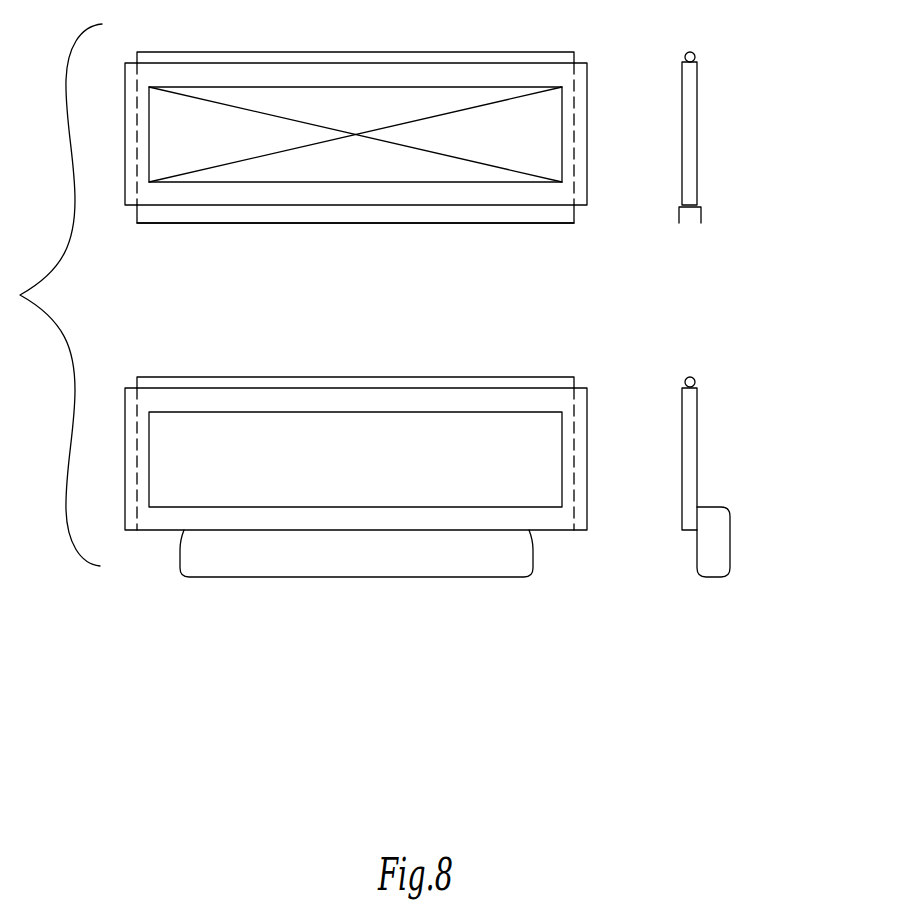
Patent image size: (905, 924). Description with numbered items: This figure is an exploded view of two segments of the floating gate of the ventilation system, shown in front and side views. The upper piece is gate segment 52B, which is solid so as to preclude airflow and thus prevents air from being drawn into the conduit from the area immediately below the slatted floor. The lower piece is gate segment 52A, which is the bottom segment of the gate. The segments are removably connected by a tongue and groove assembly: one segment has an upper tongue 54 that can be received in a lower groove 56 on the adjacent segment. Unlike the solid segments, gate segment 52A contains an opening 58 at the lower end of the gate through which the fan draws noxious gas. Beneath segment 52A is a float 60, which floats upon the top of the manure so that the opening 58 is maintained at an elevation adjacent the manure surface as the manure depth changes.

The upper tongue 54 is at (558, 56).
The gate segment 52B is at (578, 100).
The lower groove 56 is at (568, 217).
The gate segment 52A is at (580, 425).
The opening 58 is at (197, 456).
The float 60 is at (525, 553).